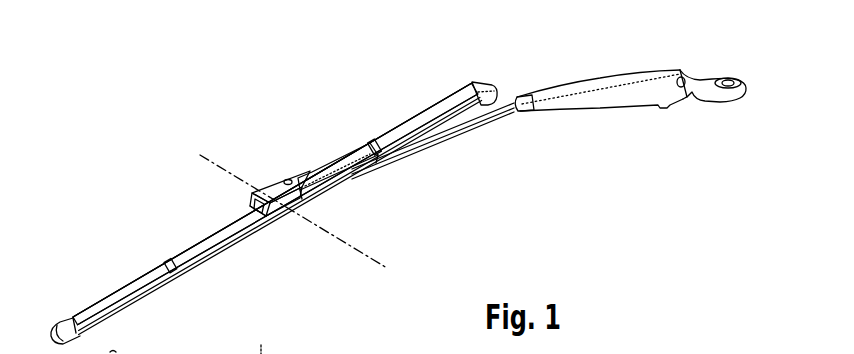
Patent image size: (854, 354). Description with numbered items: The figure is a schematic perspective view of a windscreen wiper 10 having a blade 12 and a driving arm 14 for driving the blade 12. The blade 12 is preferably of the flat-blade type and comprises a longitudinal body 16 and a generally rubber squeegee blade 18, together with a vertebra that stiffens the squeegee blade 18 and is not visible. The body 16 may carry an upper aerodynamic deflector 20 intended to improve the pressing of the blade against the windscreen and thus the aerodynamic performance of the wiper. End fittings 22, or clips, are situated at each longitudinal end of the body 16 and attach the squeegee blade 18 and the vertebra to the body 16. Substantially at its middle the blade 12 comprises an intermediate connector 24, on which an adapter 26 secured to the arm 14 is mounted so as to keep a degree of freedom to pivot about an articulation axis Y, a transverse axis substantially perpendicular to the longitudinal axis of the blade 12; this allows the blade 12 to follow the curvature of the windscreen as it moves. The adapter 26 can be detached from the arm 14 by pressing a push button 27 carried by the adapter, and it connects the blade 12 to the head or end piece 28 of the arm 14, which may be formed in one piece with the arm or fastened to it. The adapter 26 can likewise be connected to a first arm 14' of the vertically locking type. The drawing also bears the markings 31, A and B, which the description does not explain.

The windscreen wiper 10 is at (309, 96).
The blade 12 is at (102, 291).
The driving arm 14 is at (625, 118).
The first arm 14' is at (265, 341).
The longitudinal body 16 is at (147, 280).
The squeegee blade 18 is at (140, 300).
The upper aerodynamic deflector 20 is at (204, 245).
The end fittings 22 is at (484, 82).
The intermediate connector 24 is at (276, 221).
The adapter 26 is at (252, 218).
The push button 27 is at (287, 179).
The end piece 28 is at (272, 187).
The connector 31 is at (347, 183).
The longitudinal axis A is at (327, 160).
The arm axis B is at (377, 166).
The articulation axis Y is at (368, 253).